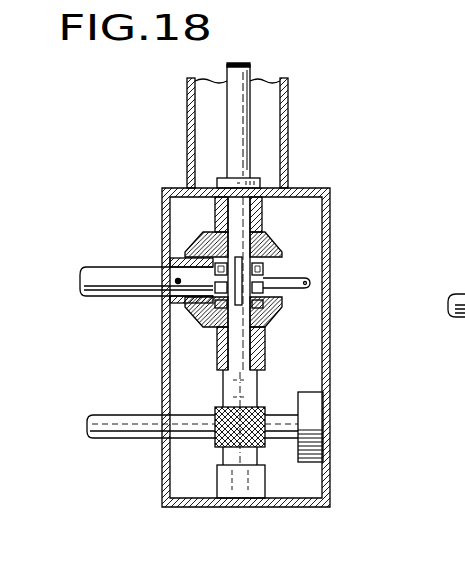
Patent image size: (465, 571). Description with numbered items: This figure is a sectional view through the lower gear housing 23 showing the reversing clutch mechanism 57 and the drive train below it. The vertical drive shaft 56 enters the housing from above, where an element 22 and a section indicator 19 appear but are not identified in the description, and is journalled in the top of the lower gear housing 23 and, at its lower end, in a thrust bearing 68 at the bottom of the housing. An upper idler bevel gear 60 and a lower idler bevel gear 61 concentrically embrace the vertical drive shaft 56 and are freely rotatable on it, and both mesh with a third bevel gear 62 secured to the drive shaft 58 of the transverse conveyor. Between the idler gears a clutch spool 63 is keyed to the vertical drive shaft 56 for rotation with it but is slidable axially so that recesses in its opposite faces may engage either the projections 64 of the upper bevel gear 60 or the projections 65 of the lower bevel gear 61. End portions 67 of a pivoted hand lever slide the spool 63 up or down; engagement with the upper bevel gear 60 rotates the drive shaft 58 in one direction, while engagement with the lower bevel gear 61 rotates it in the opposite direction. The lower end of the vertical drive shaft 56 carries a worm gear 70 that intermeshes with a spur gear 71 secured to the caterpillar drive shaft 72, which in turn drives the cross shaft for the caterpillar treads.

The section line 19- 19 is at (80, 280).
The tubular column 22 is at (288, 110).
The lower gear housing 23 is at (330, 423).
The vertical drive shaft 56 is at (235, 110).
The clutch mechanism 57 is at (190, 325).
The drive shaft 58 is at (112, 267).
The upper idler bevel gear 60 is at (280, 237).
The lower idler bevel gear 61 is at (278, 315).
The third bevel gear 62 is at (167, 309).
The clutch spool 63 is at (258, 268).
The projections 64 is at (265, 258).
The projections 65 is at (268, 305).
The end portions 67 is at (305, 290).
The thrust bearing 68 is at (225, 498).
The worm gear 70 is at (215, 442).
The spur gear 71 is at (262, 390).
The caterpillar drive shaft 72 is at (138, 392).